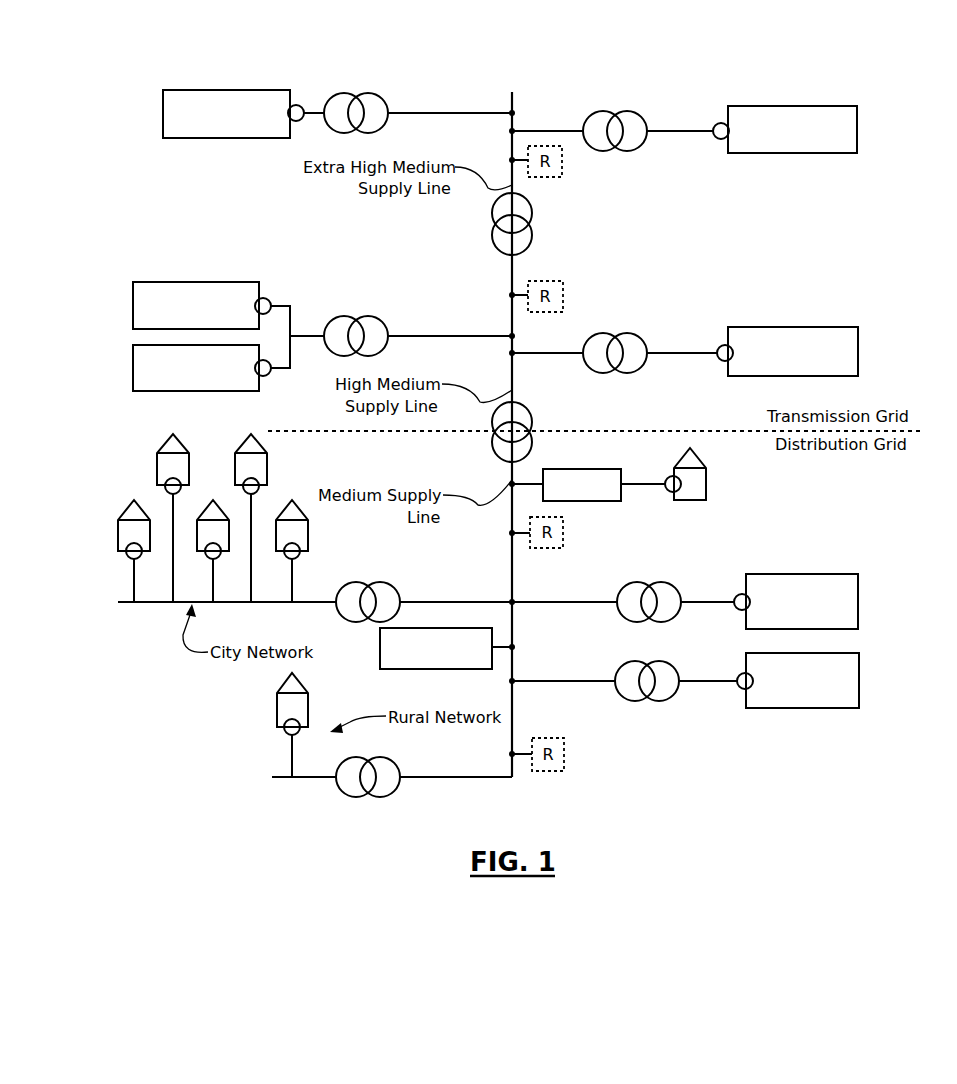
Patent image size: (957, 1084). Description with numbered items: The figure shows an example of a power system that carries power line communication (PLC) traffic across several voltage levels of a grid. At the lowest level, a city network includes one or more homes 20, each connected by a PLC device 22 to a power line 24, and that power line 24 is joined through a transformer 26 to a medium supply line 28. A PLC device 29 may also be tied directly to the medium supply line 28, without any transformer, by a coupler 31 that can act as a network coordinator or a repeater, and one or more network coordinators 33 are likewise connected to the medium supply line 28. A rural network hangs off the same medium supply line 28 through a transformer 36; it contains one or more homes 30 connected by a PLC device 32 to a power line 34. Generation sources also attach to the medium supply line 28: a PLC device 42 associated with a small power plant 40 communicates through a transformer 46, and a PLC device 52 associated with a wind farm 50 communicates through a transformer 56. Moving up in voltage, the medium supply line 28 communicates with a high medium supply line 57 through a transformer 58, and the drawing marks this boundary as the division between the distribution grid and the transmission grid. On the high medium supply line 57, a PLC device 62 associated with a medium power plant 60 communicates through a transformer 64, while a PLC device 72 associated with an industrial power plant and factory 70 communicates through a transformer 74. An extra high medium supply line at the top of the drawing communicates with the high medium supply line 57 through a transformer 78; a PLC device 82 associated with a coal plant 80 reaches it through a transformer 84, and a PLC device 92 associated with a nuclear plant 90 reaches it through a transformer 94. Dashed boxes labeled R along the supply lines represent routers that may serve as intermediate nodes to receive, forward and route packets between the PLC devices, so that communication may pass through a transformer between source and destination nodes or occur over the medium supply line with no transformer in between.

The homes 20 is at (157, 453).
The PLC device 22 is at (158, 498).
The power line 24 is at (233, 603).
The transformer 26 is at (380, 582).
The medium supply line 28 is at (435, 602).
The PLC device 29 is at (670, 492).
The homes 30 is at (277, 710).
The coupler 31 is at (592, 501).
The PLC device 32 is at (284, 734).
The network coordinator 33 is at (448, 669).
The power line 34 is at (317, 777).
The transformer 36 is at (382, 797).
The small power plant 40 is at (858, 600).
The PLC device 42 is at (738, 594).
The transformer 46 is at (628, 583).
The wind farm 50 is at (803, 708).
The PLC device 52 is at (745, 673).
The transformer 56 is at (628, 662).
The high medium supply line 57 is at (512, 275).
The transformer 58 is at (532, 413).
The medium power plant 60 is at (795, 327).
The PLC device 62 is at (723, 345).
The transformer 64 is at (601, 333).
The industrial power plant and factory 70 is at (245, 260).
The PLC device 72 is at (266, 298).
The transformer 74 is at (369, 316).
The transformer 78 is at (532, 233).
The coal plant 80 is at (787, 106).
The PLC device 82 is at (719, 123).
The transformer 84 is at (603, 111).
The nuclear plant 90 is at (238, 90).
The PLC device 92 is at (297, 105).
The transformer 94 is at (370, 94).